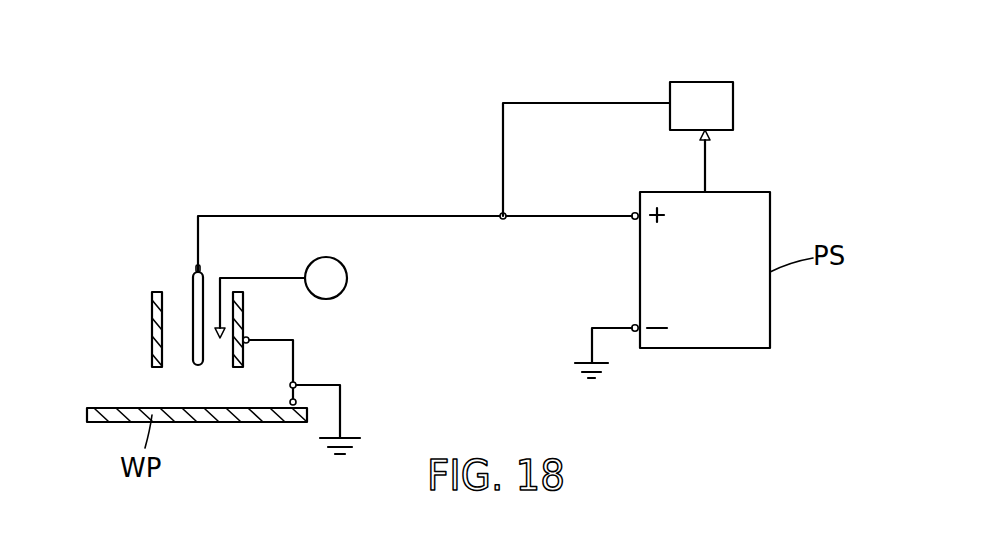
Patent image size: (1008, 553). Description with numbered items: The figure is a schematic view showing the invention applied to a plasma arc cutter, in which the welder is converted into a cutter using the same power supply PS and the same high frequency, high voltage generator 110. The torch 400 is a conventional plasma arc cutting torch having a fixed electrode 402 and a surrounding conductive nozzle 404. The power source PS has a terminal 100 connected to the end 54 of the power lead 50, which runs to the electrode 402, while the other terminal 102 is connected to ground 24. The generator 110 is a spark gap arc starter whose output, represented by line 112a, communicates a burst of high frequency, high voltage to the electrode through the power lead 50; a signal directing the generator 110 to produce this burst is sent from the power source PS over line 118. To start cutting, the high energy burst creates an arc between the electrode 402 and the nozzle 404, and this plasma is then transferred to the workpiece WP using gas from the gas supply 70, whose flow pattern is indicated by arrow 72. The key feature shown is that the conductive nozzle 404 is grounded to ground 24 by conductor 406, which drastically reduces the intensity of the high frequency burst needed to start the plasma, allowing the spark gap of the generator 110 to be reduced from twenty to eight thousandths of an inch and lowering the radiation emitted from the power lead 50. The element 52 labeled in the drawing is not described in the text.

The torch 400 is at (123, 294).
The fixed electrode 402 is at (193, 288).
The electrode tip 52 is at (196, 270).
The conductive nozzle 404 is at (150, 343).
The arrow 72 is at (249, 277).
The gas supply 70 is at (347, 264).
The power lead 50 is at (272, 216).
The conductor 406 is at (293, 363).
The ground 24 is at (320, 447).
The line 112a is at (590, 103).
The high frequency, high voltage generator 110 is at (710, 82).
The line 118 is at (705, 168).
The terminal 100 is at (633, 212).
The end of power lead 54 is at (630, 221).
The terminal 102 is at (633, 323).